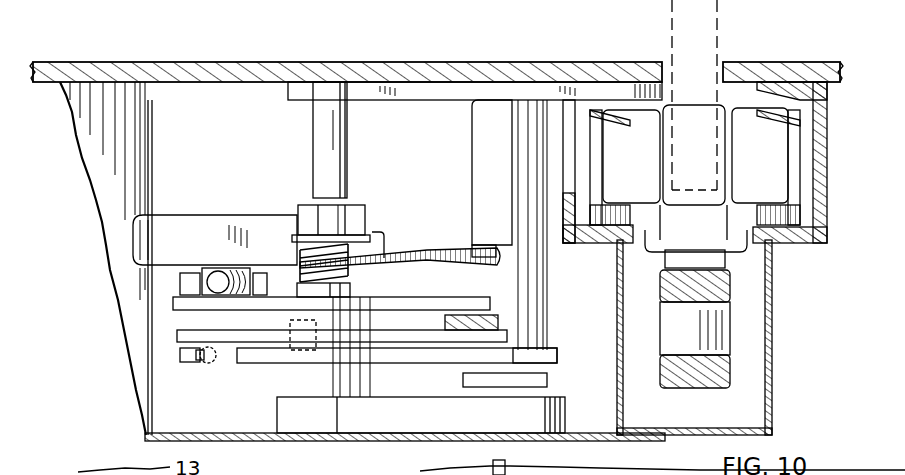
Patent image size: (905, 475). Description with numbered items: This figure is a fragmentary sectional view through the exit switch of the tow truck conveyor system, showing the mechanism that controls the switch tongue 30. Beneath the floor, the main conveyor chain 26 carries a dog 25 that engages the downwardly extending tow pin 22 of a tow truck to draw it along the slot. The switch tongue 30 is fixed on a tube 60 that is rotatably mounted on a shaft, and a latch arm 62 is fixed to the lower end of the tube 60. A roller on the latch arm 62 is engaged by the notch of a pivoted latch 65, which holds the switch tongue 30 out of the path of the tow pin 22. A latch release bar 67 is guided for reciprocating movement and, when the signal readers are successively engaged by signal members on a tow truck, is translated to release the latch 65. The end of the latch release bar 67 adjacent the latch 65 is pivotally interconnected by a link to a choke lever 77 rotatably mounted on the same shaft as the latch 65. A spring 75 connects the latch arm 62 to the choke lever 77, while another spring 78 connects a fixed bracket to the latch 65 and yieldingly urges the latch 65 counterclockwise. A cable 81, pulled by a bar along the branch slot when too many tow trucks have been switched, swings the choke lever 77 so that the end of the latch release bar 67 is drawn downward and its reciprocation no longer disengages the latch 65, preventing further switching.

The tow pin 22 is at (712, 27).
The dog 25 is at (695, 155).
The main conveyor chain 26 is at (730, 283).
The switch tongue 30 is at (393, 97).
The tube 60 is at (483, 181).
The latch arm 62 is at (437, 358).
The latch 65 is at (228, 337).
The latch release bar 67 is at (500, 322).
The spring 75 is at (207, 268).
The choke lever 77 is at (393, 298).
The spring 78 is at (205, 363).
The cable 81 is at (400, 250).